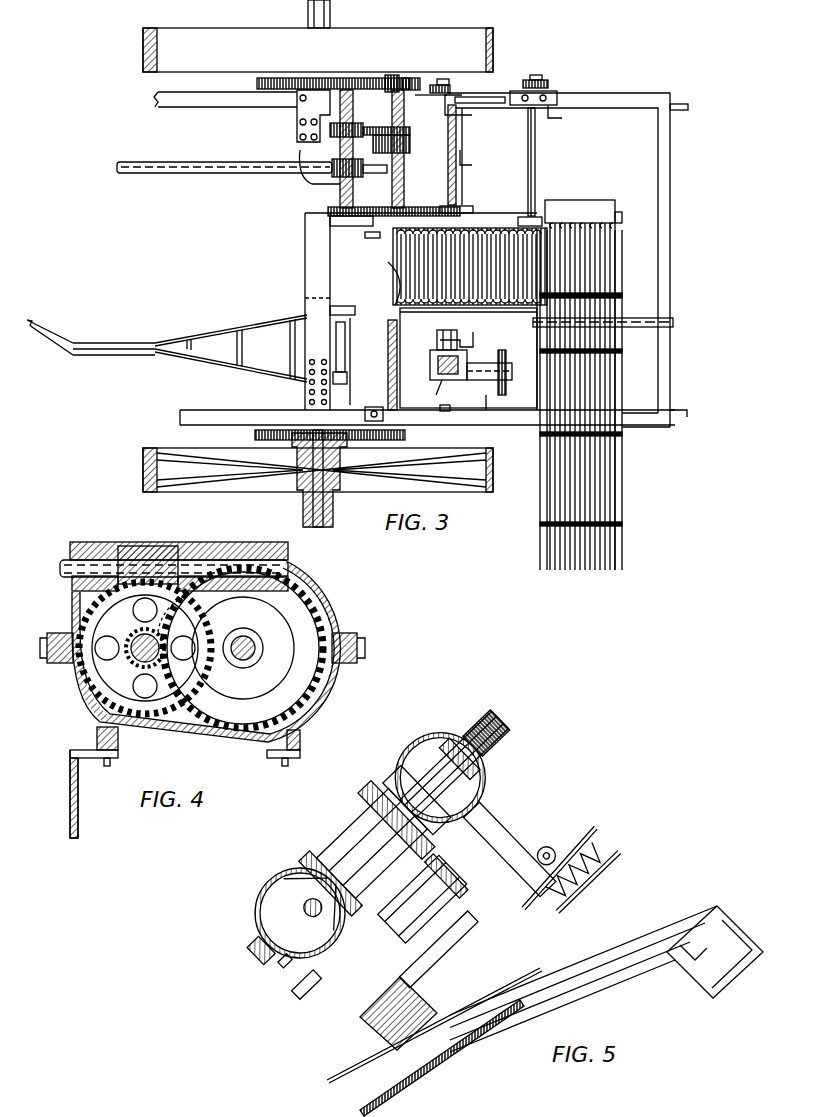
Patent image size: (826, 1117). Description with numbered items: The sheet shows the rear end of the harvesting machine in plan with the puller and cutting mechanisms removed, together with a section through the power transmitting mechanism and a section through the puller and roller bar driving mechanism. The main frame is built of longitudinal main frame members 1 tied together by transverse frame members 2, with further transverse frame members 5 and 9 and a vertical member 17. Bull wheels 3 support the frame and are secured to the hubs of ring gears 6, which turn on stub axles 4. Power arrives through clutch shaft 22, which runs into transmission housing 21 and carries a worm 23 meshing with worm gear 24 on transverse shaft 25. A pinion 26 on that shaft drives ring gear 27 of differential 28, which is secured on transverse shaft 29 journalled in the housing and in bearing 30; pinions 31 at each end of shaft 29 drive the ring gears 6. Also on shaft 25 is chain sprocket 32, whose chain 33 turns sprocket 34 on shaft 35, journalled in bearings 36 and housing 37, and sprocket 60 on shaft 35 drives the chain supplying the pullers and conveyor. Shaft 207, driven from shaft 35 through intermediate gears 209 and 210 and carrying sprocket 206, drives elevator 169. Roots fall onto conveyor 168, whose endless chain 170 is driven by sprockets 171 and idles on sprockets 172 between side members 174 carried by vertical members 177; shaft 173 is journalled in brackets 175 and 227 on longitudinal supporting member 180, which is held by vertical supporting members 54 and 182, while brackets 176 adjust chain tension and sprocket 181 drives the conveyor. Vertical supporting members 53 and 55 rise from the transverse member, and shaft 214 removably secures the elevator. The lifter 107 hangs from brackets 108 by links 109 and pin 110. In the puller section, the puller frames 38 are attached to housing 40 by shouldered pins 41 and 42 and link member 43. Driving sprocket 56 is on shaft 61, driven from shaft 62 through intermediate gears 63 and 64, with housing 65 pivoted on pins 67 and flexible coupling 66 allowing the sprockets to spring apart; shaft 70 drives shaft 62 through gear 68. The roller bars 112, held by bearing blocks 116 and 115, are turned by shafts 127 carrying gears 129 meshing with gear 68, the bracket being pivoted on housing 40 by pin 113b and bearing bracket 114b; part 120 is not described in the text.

In FIG. 3, the main frame member 1 is at (157, 91).
In FIG. 3, the transverse frame member 2 is at (667, 305).
In FIG. 3, the bull wheel 3 is at (165, 30).
In FIG. 3, the stub axle 4 is at (297, 113).
In FIG. 3, the transverse frame member 5 is at (305, 298).
In FIG. 4, the transverse frame member 5 is at (78, 803).
In FIG. 3, the ring gear 6 is at (257, 83).
In FIG. 3, the transverse frame member 9 is at (444, 410).
In FIG. 3, the vertical member 17 is at (203, 402).
In FIG. 3, the transmission housing 21 is at (418, 95).
In FIG. 4, the transmission housing 21 is at (117, 537).
In FIG. 3, the clutch shaft 22 is at (160, 160).
In FIG. 4, the clutch shaft 22 is at (60, 568).
In FIG. 3, the worm 23 is at (300, 150).
In FIG. 4, the worm 23 is at (158, 546).
In FIG. 3, the worm gear 24 is at (305, 178).
In FIG. 4, the worm gear 24 is at (95, 612).
In FIG. 3, the transverse shaft 25 is at (340, 190).
In FIG. 4, the transverse shaft 25 is at (140, 650).
In FIG. 3, the pinion 26 is at (330, 128).
In FIG. 4, the pinion 26 is at (133, 665).
In FIG. 3, the ring gear 27 is at (411, 78).
In FIG. 4, the ring gear 27 is at (232, 715).
In FIG. 3, the differential 28 is at (410, 150).
In FIG. 4, the differential 28 is at (222, 683).
In FIG. 3, the transverse shaft 29 is at (404, 176).
In FIG. 4, the transverse shaft 29 is at (250, 645).
In FIG. 3, the bearing 30 is at (380, 407).
In FIG. 3, the pinion 31 is at (390, 75).
In FIG. 3, the chain sprocket 32 is at (328, 211).
In FIG. 3, the chain 33 is at (367, 226).
In FIG. 3, the sprocket 34 is at (470, 206).
In FIG. 3, the shaft 35 is at (456, 130).
In FIG. 3, the bearing 36 is at (462, 110).
In FIG. 3, the housing 37 is at (437, 345).
In FIG. 5, the puller frame 38 is at (338, 1062).
In FIG. 5, the housing 40 is at (253, 908).
In FIG. 5, the shouldered pin 41 is at (452, 916).
In FIG. 5, the shouldered pin 42 is at (459, 893).
In FIG. 5, the link member 43 is at (443, 874).
In FIG. 3, the vertical supporting member 53 is at (462, 166).
In FIG. 3, the vertical supporting member 54 is at (505, 97).
In FIG. 3, the vertical supporting member 55 is at (485, 380).
In FIG. 5, the driving sprocket 56 is at (600, 830).
In FIG. 3, the sprocket 60 is at (443, 79).
In FIG. 5, the shaft 61 is at (505, 823).
In FIG. 5, the shaft 62 is at (440, 758).
In FIG. 5, the intermediate gear 63 is at (472, 730).
In FIG. 5, the intermediate gear 64 is at (478, 765).
In FIG. 5, the housing 65 is at (415, 735).
In FIG. 5, the flexible coupling 66 is at (390, 775).
In FIG. 5, the pin 67 is at (364, 789).
In FIG. 5, the intermediate gear 68 is at (305, 858).
In FIG. 5, the shaft 70 is at (308, 910).
In FIG. 3, the lifter 107 is at (92, 314).
In FIG. 3, the bracket 108 is at (330, 362).
In FIG. 3, the link 109 is at (365, 300).
In FIG. 3, the pin 110 is at (345, 350).
In FIG. 5, the roller bar 112 is at (666, 938).
In FIG. 5, the pin 113b is at (252, 952).
In FIG. 5, the bearing bracket 114b is at (340, 843).
In FIG. 5, the cylindrical bearing block 115 is at (372, 1092).
In FIG. 5, the cylindrical bearing block 116 is at (762, 951).
In FIG. 5, the socket 120 is at (296, 960).
In FIG. 5, the shaft 127 is at (370, 1005).
In FIG. 5, the gear 129 is at (312, 970).
In FIG. 3, the conveyor 168 is at (515, 228).
In FIG. 3, the elevator 169 is at (592, 300).
In FIG. 3, the endless chain 170 is at (392, 262).
In FIG. 3, the sprocket 171 is at (535, 262).
In FIG. 3, the sprocket 172 is at (382, 238).
In FIG. 3, the shaft 173 is at (535, 145).
In FIG. 3, the side member 174 is at (351, 325).
In FIG. 3, the bracket 175 is at (519, 218).
In FIG. 3, the bracket 176 is at (400, 326).
In FIG. 3, the vertical member 177 is at (313, 236).
In FIG. 3, the longitudinal supporting member 180 is at (557, 96).
In FIG. 3, the sprocket 181 is at (548, 80).
In FIG. 3, the vertical member 182 is at (560, 116).
In FIG. 3, the sprocket 206 is at (506, 392).
In FIG. 3, the shaft 207 is at (487, 411).
In FIG. 3, the intermediate gear 209 is at (445, 372).
In FIG. 3, the intermediate gear 210 is at (438, 393).
In FIG. 3, the shaft 214 is at (638, 327).
In FIG. 3, the bracket 227 is at (545, 96).